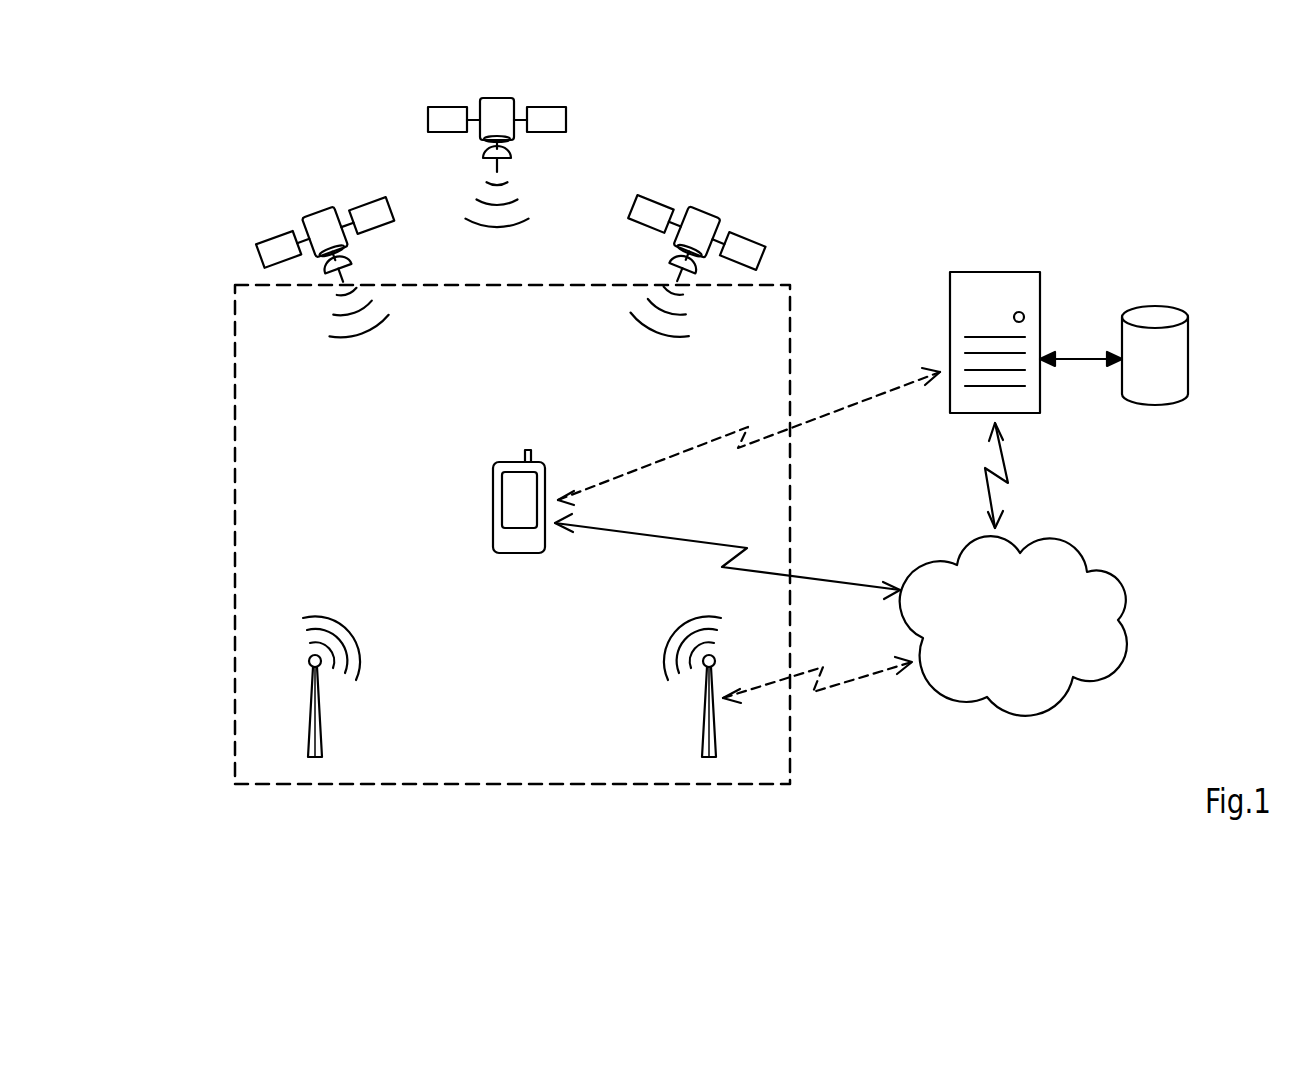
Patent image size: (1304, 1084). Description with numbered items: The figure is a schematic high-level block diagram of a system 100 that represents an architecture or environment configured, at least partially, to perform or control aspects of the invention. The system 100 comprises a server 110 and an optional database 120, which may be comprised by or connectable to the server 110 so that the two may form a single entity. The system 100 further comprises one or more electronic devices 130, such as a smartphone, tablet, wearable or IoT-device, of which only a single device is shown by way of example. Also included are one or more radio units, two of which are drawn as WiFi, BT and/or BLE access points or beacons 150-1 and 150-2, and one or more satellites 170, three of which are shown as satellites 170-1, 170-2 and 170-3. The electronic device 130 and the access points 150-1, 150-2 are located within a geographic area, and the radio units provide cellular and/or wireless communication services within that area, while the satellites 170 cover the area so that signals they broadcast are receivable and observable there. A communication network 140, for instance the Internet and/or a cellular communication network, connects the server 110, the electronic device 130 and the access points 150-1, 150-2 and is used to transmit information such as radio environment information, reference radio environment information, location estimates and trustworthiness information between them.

The system 100 is at (1100, 180).
The server 110 is at (950, 300).
The database 120 is at (1188, 360).
The electronic device 130 is at (510, 555).
The communication network 140 is at (1040, 636).
The access point 150-1 is at (327, 737).
The access point 150-2 is at (702, 740).
The satellites 170 is at (235, 343).
The satellite 170-1 is at (313, 211).
The satellite 170-2 is at (490, 96).
The satellite 170-3 is at (710, 215).